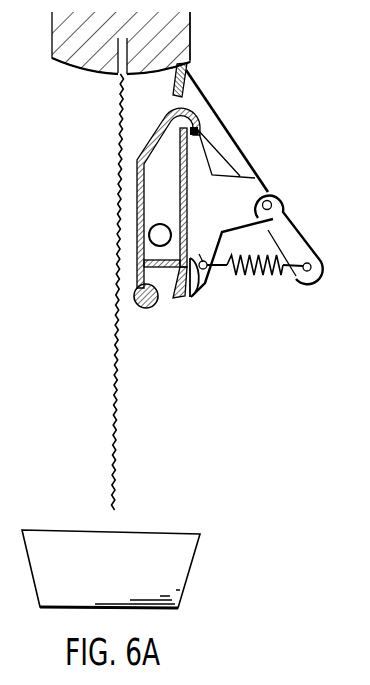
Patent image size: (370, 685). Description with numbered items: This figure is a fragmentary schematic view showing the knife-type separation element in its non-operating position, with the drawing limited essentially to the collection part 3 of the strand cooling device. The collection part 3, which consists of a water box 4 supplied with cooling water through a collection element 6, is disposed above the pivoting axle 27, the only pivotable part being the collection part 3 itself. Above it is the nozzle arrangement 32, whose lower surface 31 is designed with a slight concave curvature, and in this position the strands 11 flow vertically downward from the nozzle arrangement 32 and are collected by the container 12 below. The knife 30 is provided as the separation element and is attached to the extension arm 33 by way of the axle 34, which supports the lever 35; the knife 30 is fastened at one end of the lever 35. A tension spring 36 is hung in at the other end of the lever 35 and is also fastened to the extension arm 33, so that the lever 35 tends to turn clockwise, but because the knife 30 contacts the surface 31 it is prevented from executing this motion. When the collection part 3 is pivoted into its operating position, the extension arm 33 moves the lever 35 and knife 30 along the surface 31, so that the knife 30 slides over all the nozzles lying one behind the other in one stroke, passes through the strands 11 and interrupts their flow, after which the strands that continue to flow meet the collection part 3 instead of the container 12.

The collection part 3 is at (194, 290).
The water box 4 is at (153, 192).
The collection element 6 is at (155, 233).
The strands 11 is at (118, 378).
The container 12 is at (75, 548).
The pivoting axle 27 is at (146, 310).
The knife 30 is at (175, 82).
The surface 31 is at (65, 62).
The nozzle arrangement 32 is at (167, 40).
The extension arm 33 is at (247, 190).
The axle 34 is at (270, 201).
The lever 35 is at (210, 122).
The tension spring 36 is at (268, 272).